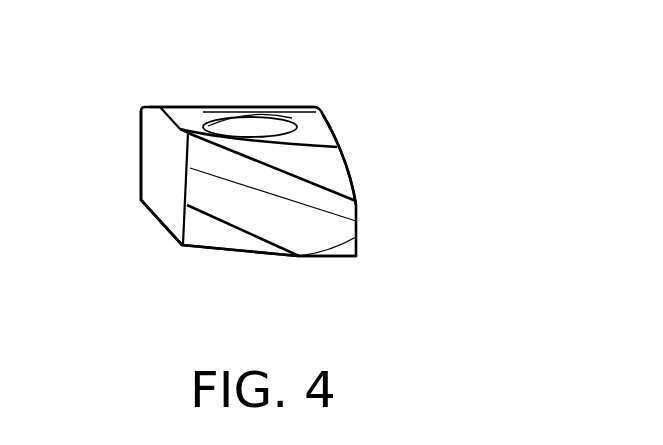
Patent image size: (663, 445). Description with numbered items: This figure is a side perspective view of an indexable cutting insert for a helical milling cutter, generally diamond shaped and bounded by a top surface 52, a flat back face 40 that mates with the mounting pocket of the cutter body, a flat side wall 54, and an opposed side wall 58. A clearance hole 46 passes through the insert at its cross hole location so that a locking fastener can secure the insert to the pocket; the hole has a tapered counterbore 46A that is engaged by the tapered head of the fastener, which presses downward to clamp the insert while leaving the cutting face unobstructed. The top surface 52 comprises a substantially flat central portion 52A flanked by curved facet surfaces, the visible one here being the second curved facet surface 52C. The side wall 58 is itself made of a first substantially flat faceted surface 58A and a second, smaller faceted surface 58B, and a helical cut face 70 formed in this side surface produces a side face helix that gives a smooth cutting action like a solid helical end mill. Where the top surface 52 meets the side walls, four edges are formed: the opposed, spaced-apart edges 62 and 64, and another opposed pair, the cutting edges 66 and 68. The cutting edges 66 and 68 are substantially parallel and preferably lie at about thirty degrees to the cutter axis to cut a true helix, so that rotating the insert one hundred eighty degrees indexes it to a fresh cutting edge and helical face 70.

The back face 40 is at (253, 255).
The clearance hole 46 is at (258, 123).
The tapered counterbore 46A is at (294, 112).
The top surface 52 is at (182, 114).
The central portion 52A is at (171, 107).
The second curved facet surface 52C is at (343, 183).
The side wall 54 is at (158, 178).
The side wall 58 is at (294, 228).
The first faceted surface 58A is at (207, 236).
The second faceted surface 58B is at (340, 257).
The edge 62 is at (171, 122).
The edge 64 is at (336, 146).
The cutting edge 66 is at (205, 118).
The cutting edge 68 is at (315, 180).
The helical cut face 70 is at (200, 193).